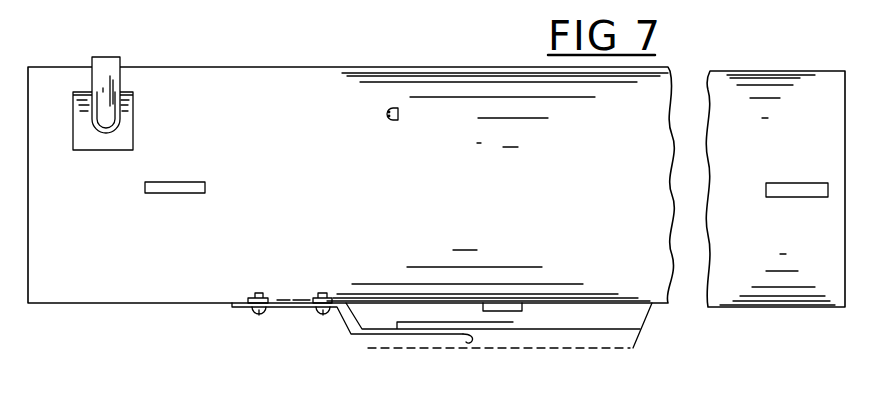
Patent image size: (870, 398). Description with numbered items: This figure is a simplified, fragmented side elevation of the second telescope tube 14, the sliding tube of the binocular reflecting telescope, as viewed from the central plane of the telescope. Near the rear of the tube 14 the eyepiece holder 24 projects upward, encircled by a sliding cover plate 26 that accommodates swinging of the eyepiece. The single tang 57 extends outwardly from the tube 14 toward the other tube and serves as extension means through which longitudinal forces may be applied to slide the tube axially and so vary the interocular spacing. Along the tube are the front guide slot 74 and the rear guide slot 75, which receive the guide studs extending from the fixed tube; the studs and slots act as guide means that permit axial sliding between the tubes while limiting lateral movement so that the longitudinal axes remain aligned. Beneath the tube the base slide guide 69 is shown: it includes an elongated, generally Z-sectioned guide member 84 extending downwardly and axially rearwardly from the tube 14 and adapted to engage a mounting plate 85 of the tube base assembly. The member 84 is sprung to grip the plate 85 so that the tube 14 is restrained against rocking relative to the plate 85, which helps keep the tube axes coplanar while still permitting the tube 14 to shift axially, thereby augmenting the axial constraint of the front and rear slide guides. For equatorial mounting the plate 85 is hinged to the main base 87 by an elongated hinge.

The second telescope tube 14 is at (313, 96).
The eyepiece holder 24 is at (100, 78).
The sliding cover plate 26 is at (120, 137).
The tang 57 is at (399, 113).
The base slide guide 69 is at (433, 346).
The front guide slot 74 is at (152, 190).
The rear guide slot 75 is at (807, 190).
The guide member 84 is at (368, 333).
The mounting plate 85 is at (608, 315).
The main base 87 is at (558, 342).